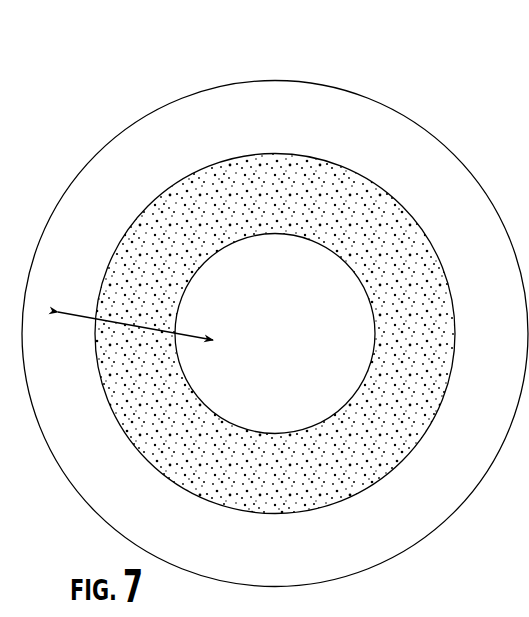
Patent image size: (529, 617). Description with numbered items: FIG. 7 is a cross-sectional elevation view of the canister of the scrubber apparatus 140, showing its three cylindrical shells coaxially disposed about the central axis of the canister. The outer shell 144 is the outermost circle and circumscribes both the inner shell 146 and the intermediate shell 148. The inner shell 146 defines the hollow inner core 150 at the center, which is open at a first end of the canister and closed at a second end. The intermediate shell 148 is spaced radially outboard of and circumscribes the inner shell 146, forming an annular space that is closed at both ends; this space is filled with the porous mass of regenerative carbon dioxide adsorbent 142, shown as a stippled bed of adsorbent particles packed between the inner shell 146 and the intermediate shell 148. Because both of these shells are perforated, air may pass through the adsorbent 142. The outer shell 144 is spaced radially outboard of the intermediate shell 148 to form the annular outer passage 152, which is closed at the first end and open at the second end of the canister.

The scrubber apparatus 140 is at (200, 50).
The porous mass of regenerative carbon dioxide adsorbent 142 is at (138, 263).
The outer shell 144 is at (324, 80).
The inner shell 146 is at (344, 258).
The intermediate shell 148 is at (376, 183).
The hollow inner core 150 is at (292, 334).
The annular outer passage 152 is at (361, 141).